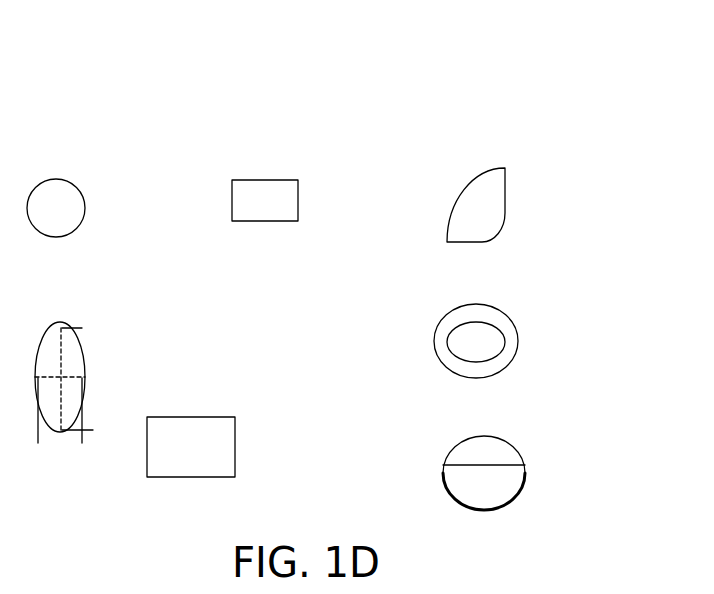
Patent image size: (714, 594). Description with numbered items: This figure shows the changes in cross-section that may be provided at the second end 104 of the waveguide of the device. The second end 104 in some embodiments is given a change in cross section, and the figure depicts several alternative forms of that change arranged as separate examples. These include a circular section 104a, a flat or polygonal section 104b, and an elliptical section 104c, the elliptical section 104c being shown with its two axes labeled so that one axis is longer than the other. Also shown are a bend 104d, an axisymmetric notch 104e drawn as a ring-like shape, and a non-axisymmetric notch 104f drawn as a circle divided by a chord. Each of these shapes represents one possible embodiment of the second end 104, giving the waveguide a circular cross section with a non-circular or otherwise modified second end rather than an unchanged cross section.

The second end 104 is at (469, 41).
The circular section 104a is at (56, 180).
The flat or polygonal section 104b is at (270, 180).
The elliptical section 104c is at (253, 317).
The bend 104d is at (464, 190).
The axisymmetric notch 104e is at (518, 343).
The non-axisymmetric notch 104f is at (522, 455).